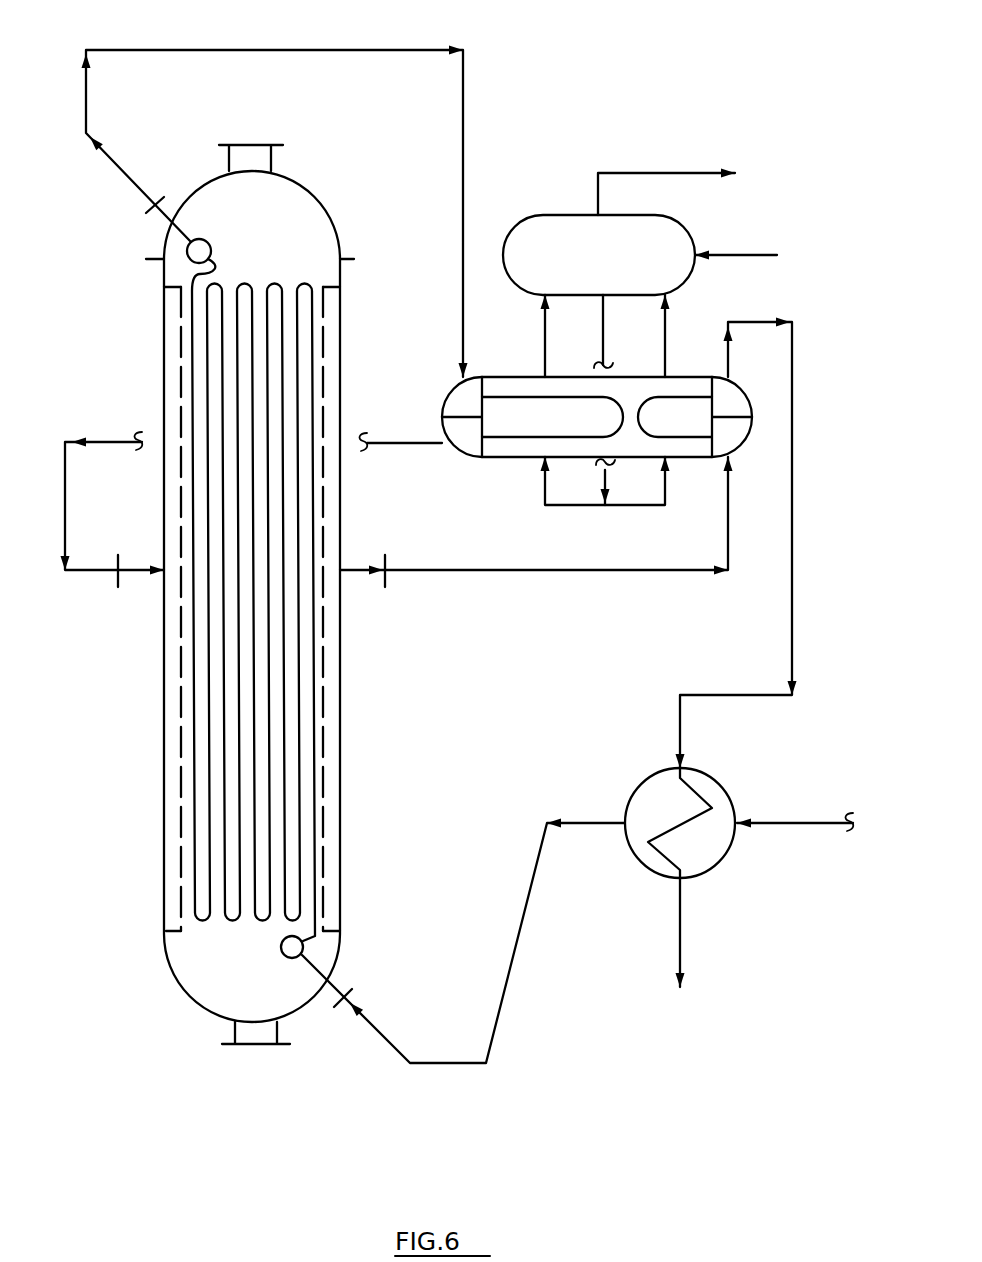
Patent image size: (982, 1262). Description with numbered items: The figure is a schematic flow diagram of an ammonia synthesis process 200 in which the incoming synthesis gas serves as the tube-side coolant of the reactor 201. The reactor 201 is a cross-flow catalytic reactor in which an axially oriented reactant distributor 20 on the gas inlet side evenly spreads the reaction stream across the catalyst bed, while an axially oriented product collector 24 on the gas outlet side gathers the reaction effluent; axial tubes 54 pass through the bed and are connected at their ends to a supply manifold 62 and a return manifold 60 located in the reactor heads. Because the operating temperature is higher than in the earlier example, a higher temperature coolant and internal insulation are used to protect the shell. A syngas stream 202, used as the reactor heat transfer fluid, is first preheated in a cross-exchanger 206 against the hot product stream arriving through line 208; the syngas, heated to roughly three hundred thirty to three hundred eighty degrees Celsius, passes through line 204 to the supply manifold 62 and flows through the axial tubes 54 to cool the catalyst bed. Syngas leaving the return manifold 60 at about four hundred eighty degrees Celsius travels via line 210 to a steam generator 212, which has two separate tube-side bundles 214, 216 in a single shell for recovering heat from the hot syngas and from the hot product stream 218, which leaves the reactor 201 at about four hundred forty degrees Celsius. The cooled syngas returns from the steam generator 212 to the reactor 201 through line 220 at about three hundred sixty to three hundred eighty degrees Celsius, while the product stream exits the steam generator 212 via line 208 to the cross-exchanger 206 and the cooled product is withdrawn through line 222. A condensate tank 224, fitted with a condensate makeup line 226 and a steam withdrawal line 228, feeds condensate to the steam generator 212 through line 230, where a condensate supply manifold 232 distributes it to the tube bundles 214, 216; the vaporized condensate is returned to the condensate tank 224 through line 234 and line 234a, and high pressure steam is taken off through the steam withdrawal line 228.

The reactant distributor 20 is at (182, 648).
The product collector 24 is at (325, 648).
The axial tubes 54 is at (270, 738).
The return manifold 60 is at (198, 240).
The supply manifold 62 is at (305, 942).
The ammonia synthesis process 200 is at (201, 1127).
The reactor 201 is at (166, 836).
The syngas stream 202 is at (790, 823).
The line 204 is at (532, 882).
The cross-exchanger 206 is at (712, 773).
The hot product stream line 208 is at (793, 638).
The line 210 is at (260, 50).
The steam generator 212 is at (522, 360).
The tube-side bundle 214 is at (587, 397).
The tube-side bundle 216 is at (673, 398).
The hot product stream 218 is at (447, 568).
The line 220 is at (437, 440).
The line 222 is at (682, 927).
The condensate tank 224 is at (670, 218).
The condensate makeup line 226 is at (747, 253).
The steam withdrawal line 228 is at (665, 173).
The line 230 is at (603, 305).
The condensate supply manifold 232 is at (585, 507).
The line 234 is at (543, 343).
The line 234a is at (666, 330).